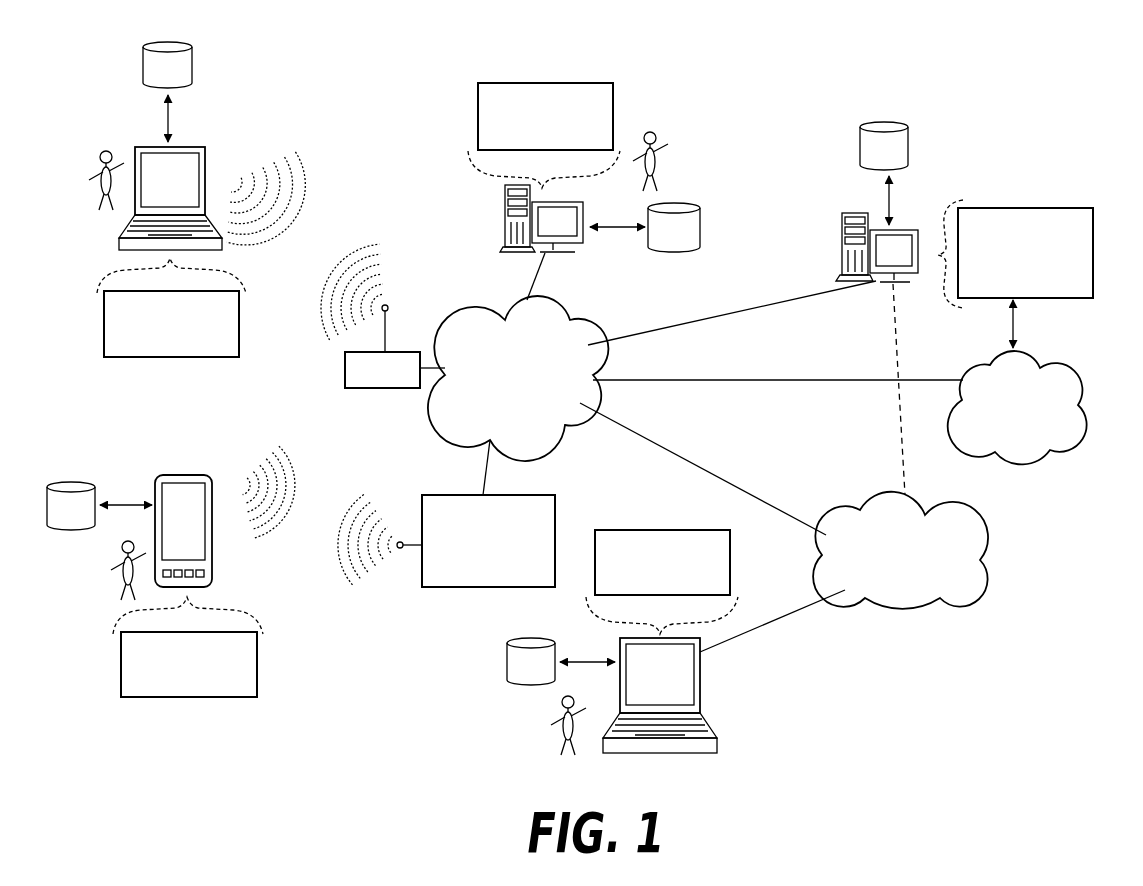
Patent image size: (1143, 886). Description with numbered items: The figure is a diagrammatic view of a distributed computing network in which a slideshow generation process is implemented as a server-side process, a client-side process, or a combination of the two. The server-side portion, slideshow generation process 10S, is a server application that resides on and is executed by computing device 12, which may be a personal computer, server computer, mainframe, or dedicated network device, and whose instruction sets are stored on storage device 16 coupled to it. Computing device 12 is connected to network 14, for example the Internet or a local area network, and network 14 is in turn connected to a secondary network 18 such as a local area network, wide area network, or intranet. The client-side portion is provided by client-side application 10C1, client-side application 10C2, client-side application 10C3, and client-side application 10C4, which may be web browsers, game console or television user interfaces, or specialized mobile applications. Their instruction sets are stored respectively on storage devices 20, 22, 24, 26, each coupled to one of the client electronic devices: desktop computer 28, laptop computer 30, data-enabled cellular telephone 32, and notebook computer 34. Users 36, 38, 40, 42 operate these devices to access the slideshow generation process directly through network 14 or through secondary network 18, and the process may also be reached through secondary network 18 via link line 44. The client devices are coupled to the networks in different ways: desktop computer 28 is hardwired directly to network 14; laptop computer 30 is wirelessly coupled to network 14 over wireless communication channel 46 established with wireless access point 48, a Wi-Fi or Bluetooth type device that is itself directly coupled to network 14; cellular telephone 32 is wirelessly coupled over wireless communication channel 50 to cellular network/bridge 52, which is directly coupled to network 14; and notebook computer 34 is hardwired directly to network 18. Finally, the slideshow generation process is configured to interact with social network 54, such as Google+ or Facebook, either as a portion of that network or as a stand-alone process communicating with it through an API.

The slideshow generation process (server-side) 10S is at (1094, 243).
The client-side application 10C1 is at (614, 113).
The client-side application 10C2 is at (239, 322).
The client-side application 10C3 is at (257, 659).
The client-side application 10C4 is at (731, 565).
The computing device 12 is at (843, 228).
The network 14 is at (518, 378).
The storage device 16 is at (884, 146).
The secondary network 18 is at (900, 550).
The storage device 20 is at (674, 227).
The storage device 22 is at (167, 65).
The storage device 24 is at (71, 506).
The storage device 26 is at (531, 661).
The desktop computer 28 is at (583, 207).
The laptop computer 30 is at (205, 158).
The data-enabled cellular telephone 32 is at (213, 527).
The notebook computer 34 is at (701, 681).
The user 36 is at (668, 161).
The user 38 is at (92, 187).
The user 40 is at (120, 568).
The user 42 is at (553, 730).
The link line 44 is at (902, 422).
The wireless communication channel 46 is at (313, 211).
The wireless access point 48 is at (345, 375).
The wireless communication channel 50 is at (312, 488).
The cellular network/bridge 52 is at (556, 508).
The social network 54 is at (1017, 407).